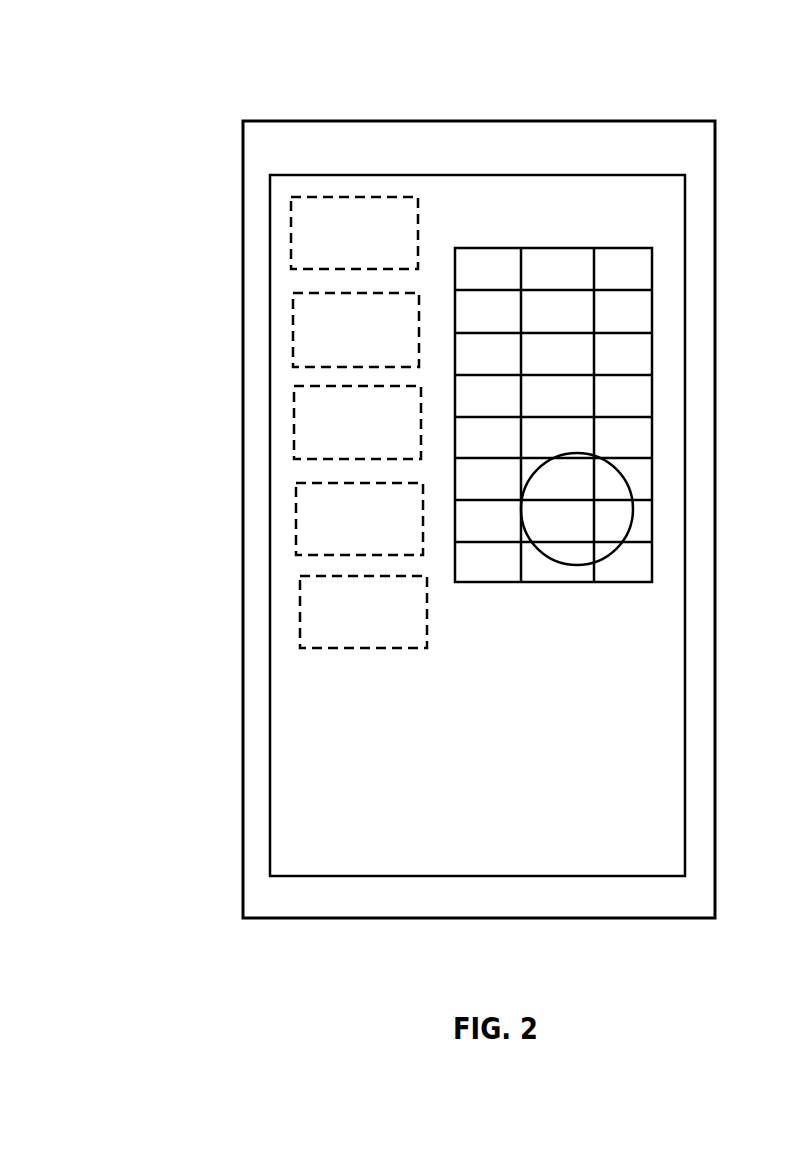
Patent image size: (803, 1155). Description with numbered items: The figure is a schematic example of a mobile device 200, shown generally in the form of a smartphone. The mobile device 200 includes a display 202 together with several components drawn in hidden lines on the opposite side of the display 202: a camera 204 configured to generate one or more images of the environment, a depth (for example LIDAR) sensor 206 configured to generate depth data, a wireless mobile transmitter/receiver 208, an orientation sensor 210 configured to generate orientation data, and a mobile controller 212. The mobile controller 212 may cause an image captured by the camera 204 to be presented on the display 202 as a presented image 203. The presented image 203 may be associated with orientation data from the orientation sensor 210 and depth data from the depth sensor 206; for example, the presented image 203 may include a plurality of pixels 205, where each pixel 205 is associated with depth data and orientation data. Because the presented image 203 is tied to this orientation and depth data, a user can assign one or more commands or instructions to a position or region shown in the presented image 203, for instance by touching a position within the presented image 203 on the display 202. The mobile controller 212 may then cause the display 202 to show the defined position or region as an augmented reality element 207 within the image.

The mobile device 200 is at (126, 90).
The display 202 is at (270, 703).
The presented image 203 is at (482, 582).
The camera 204 is at (291, 224).
The pixel 205 is at (575, 326).
The depth sensor 206 is at (293, 349).
The augmented reality element 207 is at (562, 563).
The wireless mobile transmitter/receiver 208 is at (294, 417).
The orientation sensor 210 is at (296, 513).
The mobile controller 212 is at (300, 605).